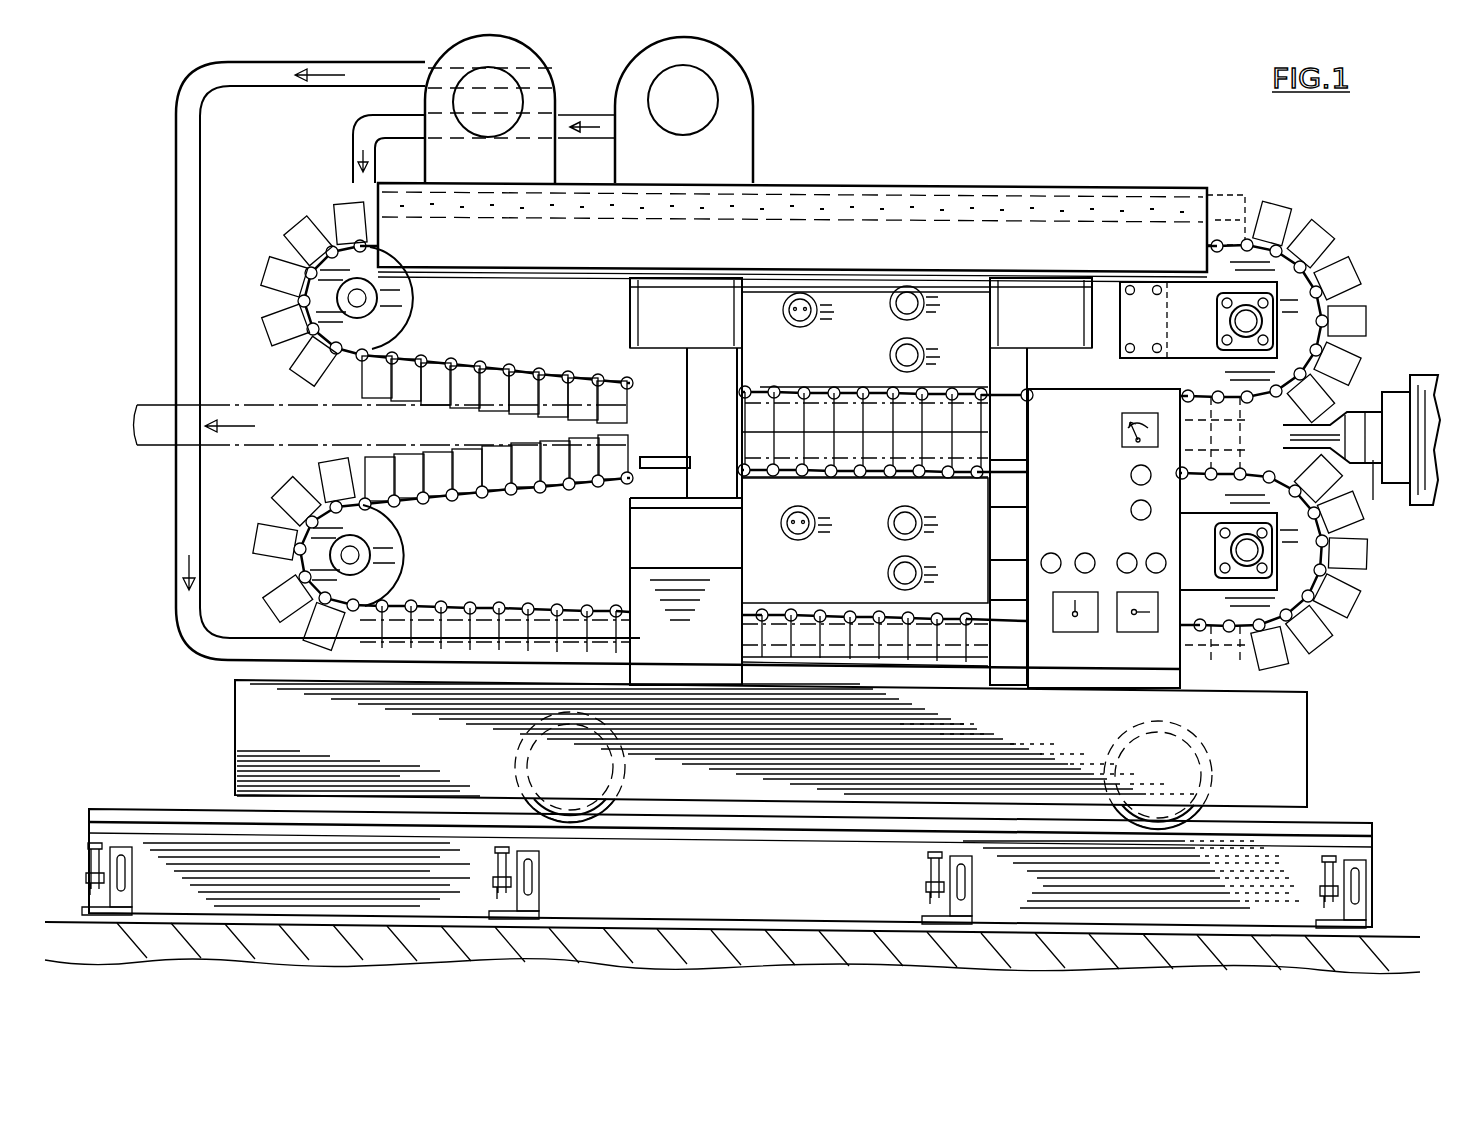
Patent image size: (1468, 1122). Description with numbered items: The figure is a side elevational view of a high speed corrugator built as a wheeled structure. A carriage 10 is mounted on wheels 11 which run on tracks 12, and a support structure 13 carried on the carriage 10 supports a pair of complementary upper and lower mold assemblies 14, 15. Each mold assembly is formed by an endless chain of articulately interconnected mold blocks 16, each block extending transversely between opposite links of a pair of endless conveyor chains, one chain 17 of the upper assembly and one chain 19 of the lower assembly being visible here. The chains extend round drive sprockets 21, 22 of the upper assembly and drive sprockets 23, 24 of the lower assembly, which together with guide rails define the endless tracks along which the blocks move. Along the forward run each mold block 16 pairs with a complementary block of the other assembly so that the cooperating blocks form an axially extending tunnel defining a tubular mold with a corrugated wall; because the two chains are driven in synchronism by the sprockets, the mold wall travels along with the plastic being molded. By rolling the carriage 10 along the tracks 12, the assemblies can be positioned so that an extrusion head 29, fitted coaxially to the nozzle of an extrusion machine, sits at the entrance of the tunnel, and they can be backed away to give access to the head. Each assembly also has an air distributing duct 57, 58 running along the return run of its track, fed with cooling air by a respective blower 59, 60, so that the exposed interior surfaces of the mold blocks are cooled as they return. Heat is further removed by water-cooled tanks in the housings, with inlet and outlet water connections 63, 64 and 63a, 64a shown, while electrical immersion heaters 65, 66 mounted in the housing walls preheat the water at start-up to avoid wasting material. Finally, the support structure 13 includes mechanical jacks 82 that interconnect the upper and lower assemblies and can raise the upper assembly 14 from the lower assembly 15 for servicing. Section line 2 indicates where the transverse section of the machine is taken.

The section line 2- 2 is at (1245, 185).
The carriage 10 is at (1295, 746).
The wheels 11 is at (568, 816).
The tracks 12 is at (200, 808).
The support structure 13 is at (692, 660).
The upper mold assembly 14 is at (518, 310).
The lower mold assembly 15 is at (520, 588).
The mold blocks 16 is at (290, 352).
The endless conveyor chain 17 is at (510, 372).
The endless conveyor chain 19 is at (540, 494).
The drive sprocket 21 is at (385, 298).
The drive sprocket 22 is at (1295, 346).
The drive sprocket 23 is at (395, 573).
The drive sprocket 24 is at (1295, 550).
The extrusion head 29 is at (1361, 455).
The air distributing duct 57 is at (820, 205).
The air distributing duct 58 is at (290, 650).
The blower 59 is at (740, 128).
The blower 60 is at (445, 153).
The inlet water connection 63 is at (925, 355).
The inlet water connection 63a is at (912, 508).
The outlet water connection 64 is at (925, 303).
The outlet water connection 64a is at (915, 566).
The electrical immersion heater 65 is at (800, 323).
The electrical immersion heater 66 is at (796, 537).
The mechanical jacks 82 is at (706, 360).